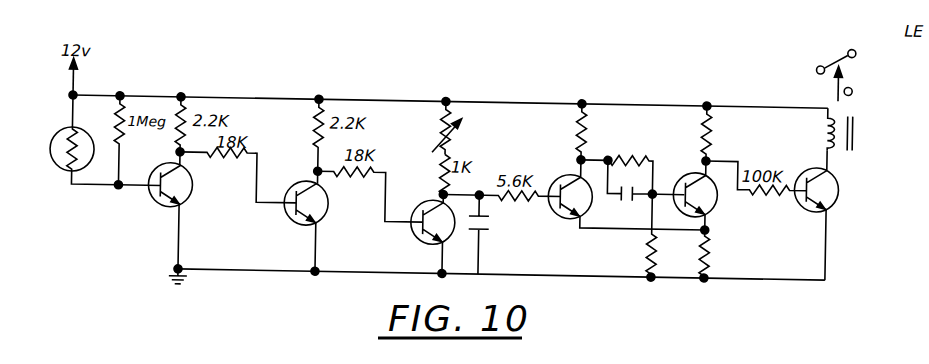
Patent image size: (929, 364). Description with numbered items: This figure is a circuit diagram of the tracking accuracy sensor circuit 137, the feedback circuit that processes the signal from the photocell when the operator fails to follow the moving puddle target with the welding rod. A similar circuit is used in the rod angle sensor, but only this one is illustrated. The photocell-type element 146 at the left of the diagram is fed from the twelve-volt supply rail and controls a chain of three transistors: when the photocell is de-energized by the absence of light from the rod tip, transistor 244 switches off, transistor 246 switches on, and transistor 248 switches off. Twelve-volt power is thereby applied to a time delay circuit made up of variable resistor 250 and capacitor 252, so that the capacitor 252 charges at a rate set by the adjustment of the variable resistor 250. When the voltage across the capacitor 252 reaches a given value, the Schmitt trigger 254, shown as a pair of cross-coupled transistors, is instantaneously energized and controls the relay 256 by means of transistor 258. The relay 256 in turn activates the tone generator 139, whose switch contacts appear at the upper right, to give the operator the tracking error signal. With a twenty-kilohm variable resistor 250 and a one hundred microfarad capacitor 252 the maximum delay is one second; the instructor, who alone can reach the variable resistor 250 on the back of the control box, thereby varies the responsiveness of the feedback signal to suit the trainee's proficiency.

The photocell 146 is at (62, 127).
The transistor 244 is at (164, 205).
The transistor 246 is at (301, 219).
The transistor 248 is at (423, 235).
The variable resistor 250 is at (454, 130).
The capacitor 252 is at (484, 222).
The Schmitt trigger 254 is at (727, 79).
The relay 256 is at (857, 116).
The transistor 258 is at (836, 186).
The tracking accuracy sensor circuit 137 is at (186, 277).
The tone generator 139 is at (825, 46).